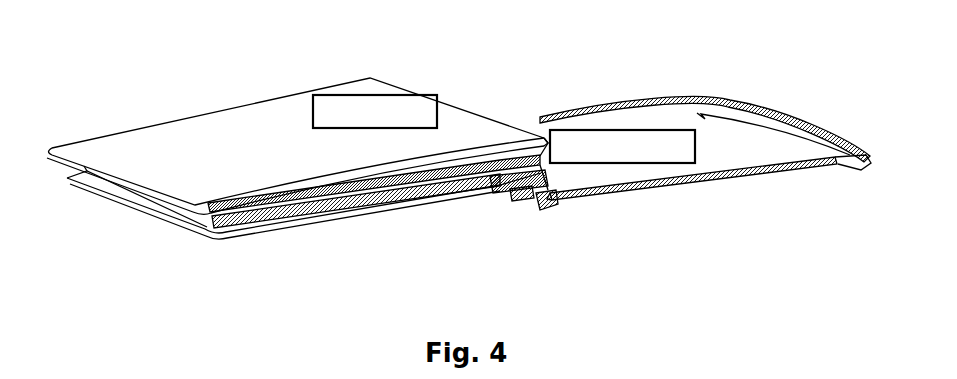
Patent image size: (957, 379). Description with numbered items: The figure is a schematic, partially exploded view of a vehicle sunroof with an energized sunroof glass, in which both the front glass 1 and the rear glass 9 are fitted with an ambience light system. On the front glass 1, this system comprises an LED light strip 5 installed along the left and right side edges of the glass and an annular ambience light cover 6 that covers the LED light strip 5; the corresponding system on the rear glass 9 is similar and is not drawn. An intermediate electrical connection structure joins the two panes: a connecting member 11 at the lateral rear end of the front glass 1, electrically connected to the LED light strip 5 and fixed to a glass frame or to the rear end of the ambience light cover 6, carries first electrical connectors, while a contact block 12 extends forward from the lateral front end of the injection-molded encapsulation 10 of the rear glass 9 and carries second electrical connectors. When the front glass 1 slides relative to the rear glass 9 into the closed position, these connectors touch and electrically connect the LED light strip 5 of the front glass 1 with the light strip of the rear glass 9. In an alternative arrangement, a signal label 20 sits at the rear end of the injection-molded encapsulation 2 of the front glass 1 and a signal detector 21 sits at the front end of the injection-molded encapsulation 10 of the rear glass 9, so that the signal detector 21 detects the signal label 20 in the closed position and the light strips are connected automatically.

The front glass 1 is at (223, 118).
The injection-molded encapsulation of the front glass 2 is at (395, 168).
The LED light strip 5 is at (318, 208).
The annular ambience light cover 6 is at (198, 227).
The rear glass 9 is at (633, 127).
The injection-molded encapsulation of the rear glass 10 is at (547, 207).
The connecting member 11 is at (510, 187).
The contact block 12 is at (520, 194).
The signal label 20 is at (377, 92).
The signal detector 21 is at (565, 128).